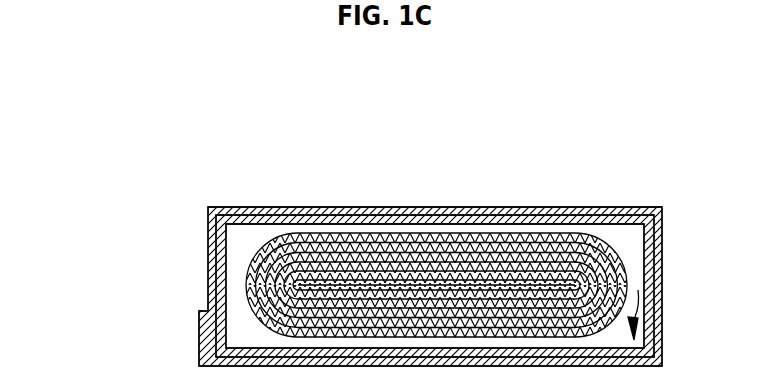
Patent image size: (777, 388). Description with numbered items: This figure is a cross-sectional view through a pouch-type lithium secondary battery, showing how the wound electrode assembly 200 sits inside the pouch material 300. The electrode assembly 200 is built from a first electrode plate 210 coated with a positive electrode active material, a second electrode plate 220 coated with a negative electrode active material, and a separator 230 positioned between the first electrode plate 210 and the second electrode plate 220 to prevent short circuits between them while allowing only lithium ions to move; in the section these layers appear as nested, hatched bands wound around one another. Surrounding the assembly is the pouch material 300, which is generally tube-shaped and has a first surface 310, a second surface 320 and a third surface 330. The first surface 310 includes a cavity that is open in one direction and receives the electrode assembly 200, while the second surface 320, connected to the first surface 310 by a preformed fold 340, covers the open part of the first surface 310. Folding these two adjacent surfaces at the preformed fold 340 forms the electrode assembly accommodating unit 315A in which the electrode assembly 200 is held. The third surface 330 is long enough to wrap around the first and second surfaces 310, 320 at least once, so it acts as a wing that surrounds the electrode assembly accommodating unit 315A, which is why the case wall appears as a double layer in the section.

The electrode assembly 200 is at (105, 259).
The first electrode plate 210 is at (260, 256).
The second electrode plate 220 is at (260, 310).
The separator 230 is at (260, 284).
The pouch material 300 is at (445, 120).
The first surface 310 is at (377, 207).
The electrode assembly accommodating unit 315A is at (627, 232).
The second surface 320 is at (457, 352).
The third surface 330 is at (307, 207).
The preformed fold 340 is at (663, 277).